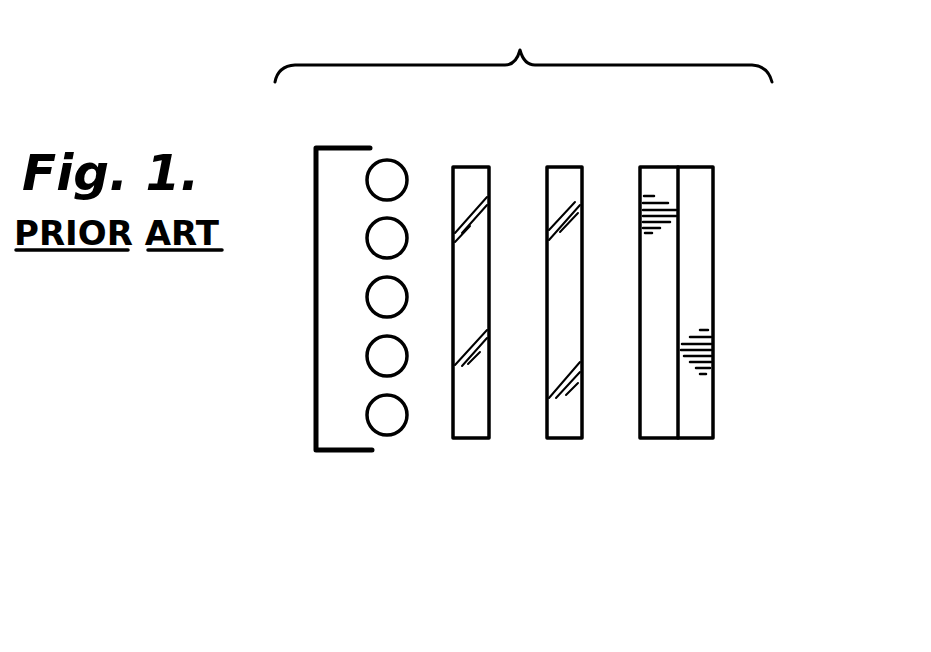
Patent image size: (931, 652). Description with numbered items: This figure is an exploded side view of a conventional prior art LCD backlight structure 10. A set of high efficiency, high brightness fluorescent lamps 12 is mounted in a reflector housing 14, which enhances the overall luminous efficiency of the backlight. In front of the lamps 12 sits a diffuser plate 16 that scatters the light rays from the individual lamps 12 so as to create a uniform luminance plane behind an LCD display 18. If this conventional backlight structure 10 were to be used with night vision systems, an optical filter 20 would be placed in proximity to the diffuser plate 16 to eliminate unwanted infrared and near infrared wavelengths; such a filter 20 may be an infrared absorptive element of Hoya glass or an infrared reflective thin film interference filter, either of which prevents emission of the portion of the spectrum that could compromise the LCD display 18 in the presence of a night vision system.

The LCD backlight structure 10 is at (523, 44).
The fluorescent lamps 12 is at (404, 447).
The reflector housing 14 is at (308, 354).
The diffuser plate 16 is at (570, 448).
The LCD display 18 is at (718, 297).
The optical filter 20 is at (455, 157).